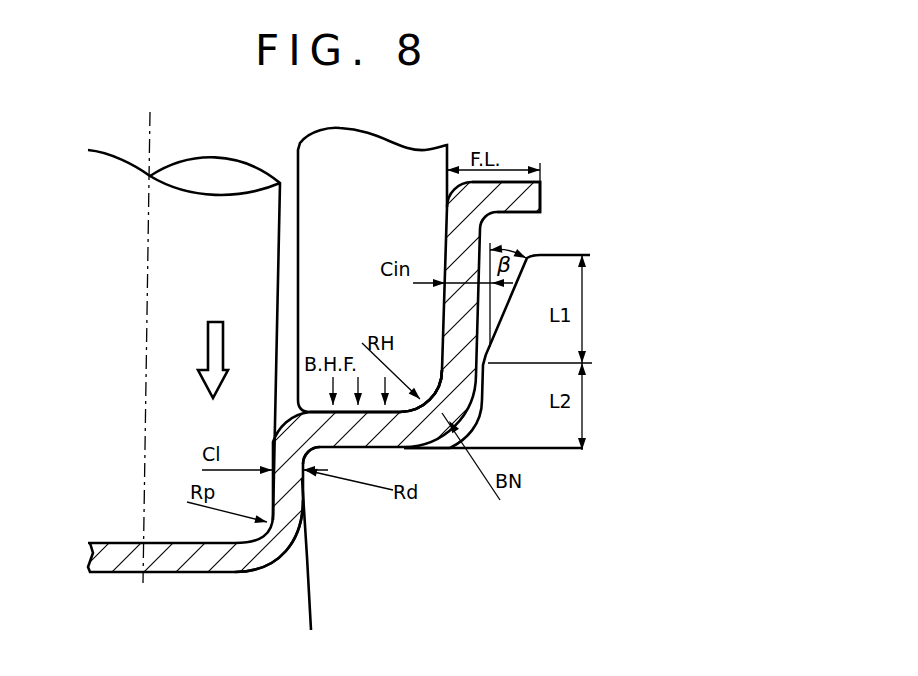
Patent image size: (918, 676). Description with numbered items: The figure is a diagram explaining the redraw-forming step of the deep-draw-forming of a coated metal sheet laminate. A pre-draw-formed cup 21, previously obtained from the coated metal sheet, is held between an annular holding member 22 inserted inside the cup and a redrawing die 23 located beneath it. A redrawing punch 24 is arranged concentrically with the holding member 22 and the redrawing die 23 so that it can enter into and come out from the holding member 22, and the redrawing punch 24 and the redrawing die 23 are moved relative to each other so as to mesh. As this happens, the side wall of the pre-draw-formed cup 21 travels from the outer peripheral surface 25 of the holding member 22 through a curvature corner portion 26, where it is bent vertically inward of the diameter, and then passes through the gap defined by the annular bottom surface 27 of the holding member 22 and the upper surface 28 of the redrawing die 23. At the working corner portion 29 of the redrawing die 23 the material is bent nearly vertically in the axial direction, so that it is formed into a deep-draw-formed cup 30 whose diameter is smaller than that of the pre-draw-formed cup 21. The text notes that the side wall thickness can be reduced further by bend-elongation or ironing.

The pre-draw-formed cup 21 is at (480, 235).
The holding member 22 is at (378, 236).
The redrawing die 23 is at (443, 574).
The redrawing punch 24 is at (206, 272).
The outer peripheral surface 25 is at (447, 184).
The curvature corner portion 26 is at (413, 393).
The annular bottom surface 27 is at (321, 411).
The upper surface 28 is at (437, 451).
The working corner portion 29 is at (312, 455).
The deep-draw-formed cup 30 is at (303, 503).